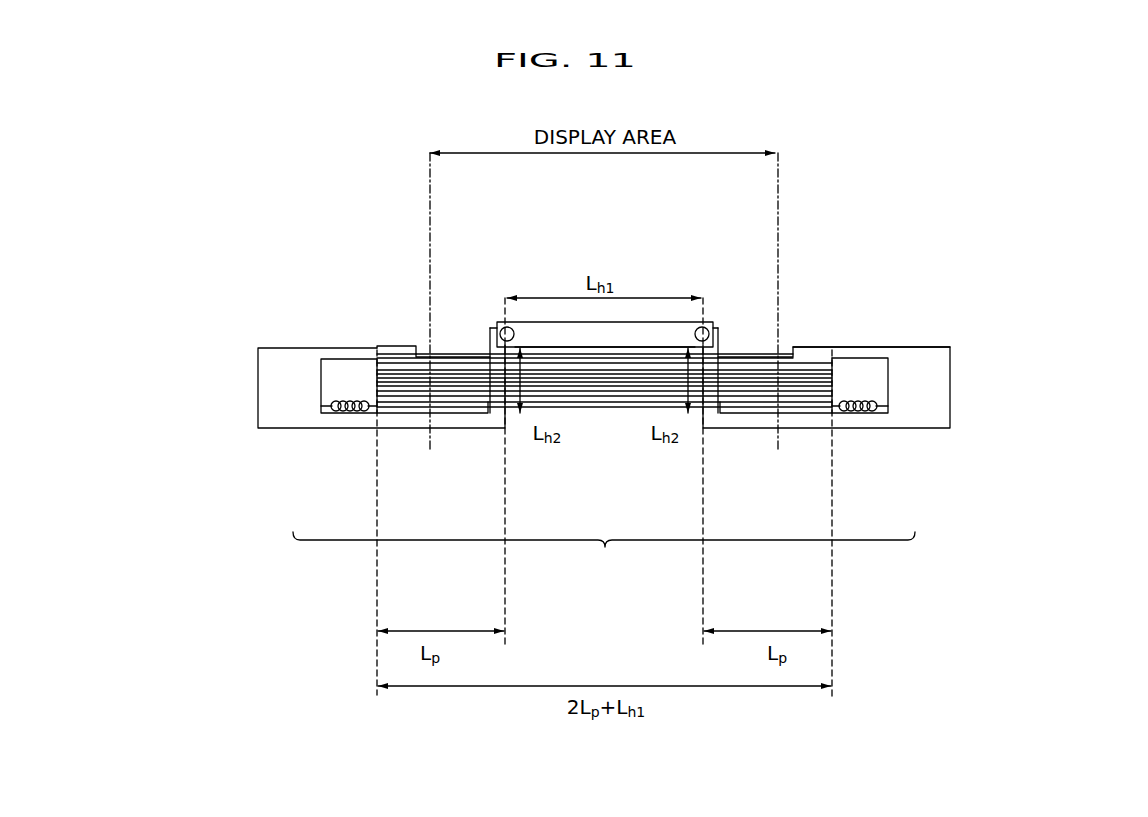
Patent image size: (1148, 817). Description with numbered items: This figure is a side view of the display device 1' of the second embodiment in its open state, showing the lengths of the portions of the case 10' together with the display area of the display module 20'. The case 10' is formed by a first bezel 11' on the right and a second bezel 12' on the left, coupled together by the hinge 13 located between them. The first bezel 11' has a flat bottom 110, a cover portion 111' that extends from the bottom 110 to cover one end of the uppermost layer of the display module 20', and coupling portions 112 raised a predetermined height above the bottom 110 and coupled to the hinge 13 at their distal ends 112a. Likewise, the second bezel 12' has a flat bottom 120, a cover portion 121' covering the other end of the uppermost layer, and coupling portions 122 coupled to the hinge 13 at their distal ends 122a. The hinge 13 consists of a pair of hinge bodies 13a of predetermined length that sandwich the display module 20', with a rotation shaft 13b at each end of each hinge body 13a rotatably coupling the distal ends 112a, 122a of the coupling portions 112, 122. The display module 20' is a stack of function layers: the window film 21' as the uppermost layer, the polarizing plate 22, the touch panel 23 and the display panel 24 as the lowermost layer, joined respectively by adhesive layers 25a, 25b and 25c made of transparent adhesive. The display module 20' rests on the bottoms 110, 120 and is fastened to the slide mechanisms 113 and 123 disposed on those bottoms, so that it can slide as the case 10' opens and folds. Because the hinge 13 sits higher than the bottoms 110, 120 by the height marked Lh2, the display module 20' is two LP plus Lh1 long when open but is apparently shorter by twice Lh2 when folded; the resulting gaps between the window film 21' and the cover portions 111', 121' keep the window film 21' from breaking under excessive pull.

The display device 1' is at (998, 195).
The case 10' is at (604, 554).
The first bezel 11' is at (826, 438).
The second bezel 12' is at (381, 437).
The hinge 13 is at (482, 206).
The hinge body 13a is at (636, 336).
The rotation shaft 13b is at (500, 321).
The display module 20' is at (470, 355).
The window film 21' is at (475, 326).
The polarizing plate 22 is at (377, 374).
The touch panel 23 is at (377, 385).
The display panel 24 is at (377, 398).
The adhesive layer 25a is at (377, 368).
The adhesive layer 25b is at (377, 379).
The adhesive layer 25c is at (377, 391).
The bottom 110 is at (837, 432).
The cover portion 111' is at (871, 305).
The coupling portion 112 is at (708, 377).
The distal end 112a is at (718, 328).
The slide mechanism 113 is at (805, 418).
The bottom 120 is at (353, 432).
The cover portion 121' is at (398, 308).
The coupling portion 122 is at (500, 377).
The distal end 122a is at (488, 326).
The slide mechanism 123 is at (399, 418).